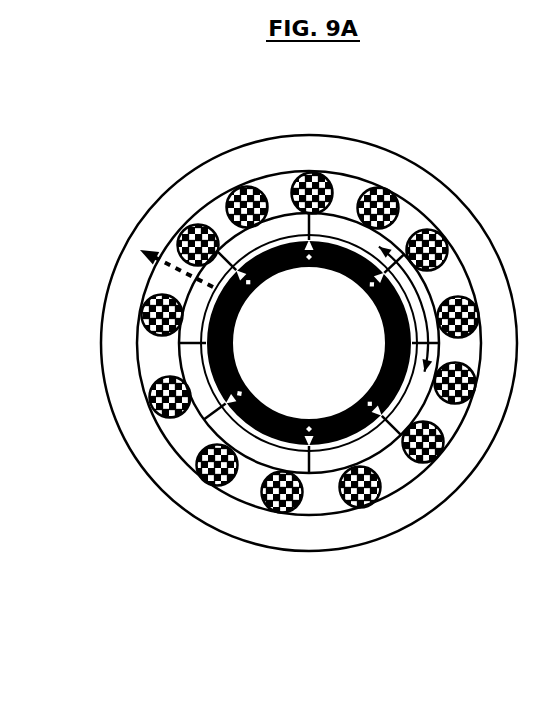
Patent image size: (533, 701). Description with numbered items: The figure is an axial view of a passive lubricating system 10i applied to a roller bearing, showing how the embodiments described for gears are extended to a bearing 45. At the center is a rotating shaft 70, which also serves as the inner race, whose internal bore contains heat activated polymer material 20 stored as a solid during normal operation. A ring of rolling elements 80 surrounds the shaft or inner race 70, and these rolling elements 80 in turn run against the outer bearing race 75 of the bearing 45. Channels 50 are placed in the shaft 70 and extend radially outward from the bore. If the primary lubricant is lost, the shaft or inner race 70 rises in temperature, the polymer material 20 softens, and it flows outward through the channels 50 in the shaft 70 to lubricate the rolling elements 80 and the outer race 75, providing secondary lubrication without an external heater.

The lubricating system 10i is at (58, 206).
The heat activated polymer material 20 is at (245, 278).
The bearing 45 is at (168, 179).
The channel 50 is at (372, 403).
The rotating shaft 70 is at (285, 238).
The outer bearing race 75 is at (418, 180).
The rolling elements 80 is at (333, 184).